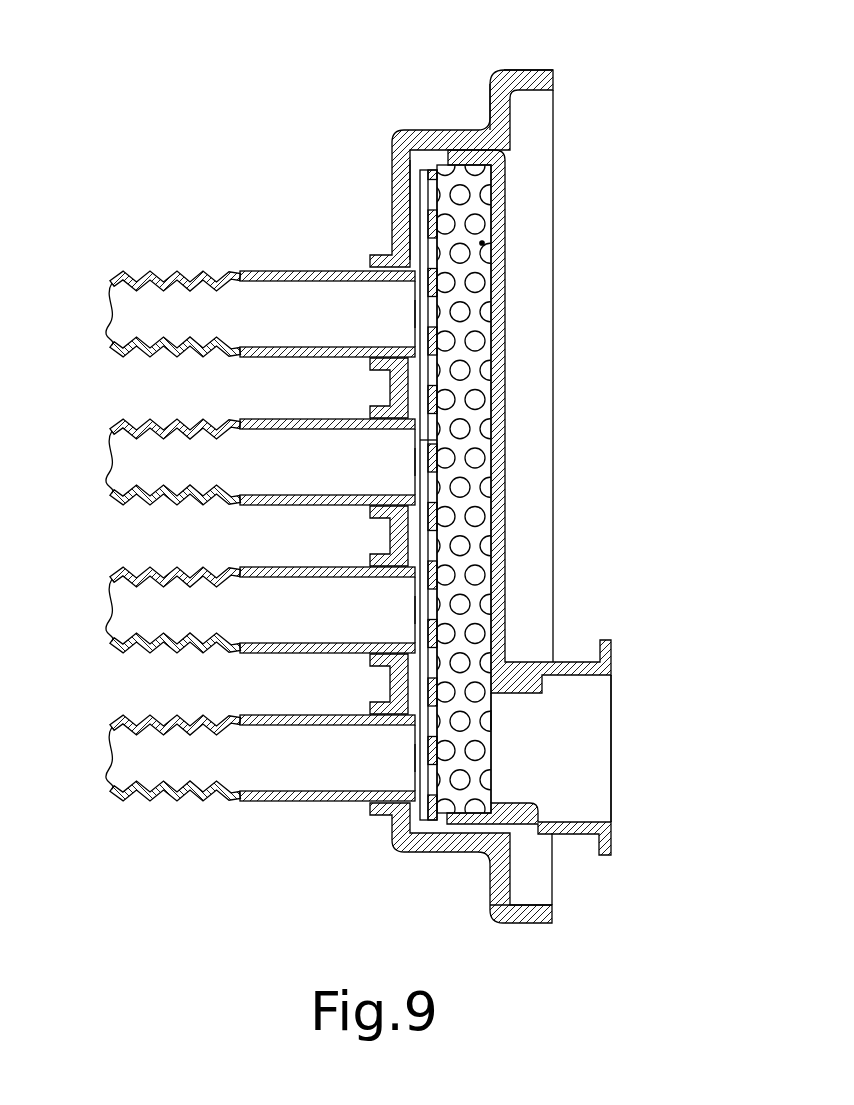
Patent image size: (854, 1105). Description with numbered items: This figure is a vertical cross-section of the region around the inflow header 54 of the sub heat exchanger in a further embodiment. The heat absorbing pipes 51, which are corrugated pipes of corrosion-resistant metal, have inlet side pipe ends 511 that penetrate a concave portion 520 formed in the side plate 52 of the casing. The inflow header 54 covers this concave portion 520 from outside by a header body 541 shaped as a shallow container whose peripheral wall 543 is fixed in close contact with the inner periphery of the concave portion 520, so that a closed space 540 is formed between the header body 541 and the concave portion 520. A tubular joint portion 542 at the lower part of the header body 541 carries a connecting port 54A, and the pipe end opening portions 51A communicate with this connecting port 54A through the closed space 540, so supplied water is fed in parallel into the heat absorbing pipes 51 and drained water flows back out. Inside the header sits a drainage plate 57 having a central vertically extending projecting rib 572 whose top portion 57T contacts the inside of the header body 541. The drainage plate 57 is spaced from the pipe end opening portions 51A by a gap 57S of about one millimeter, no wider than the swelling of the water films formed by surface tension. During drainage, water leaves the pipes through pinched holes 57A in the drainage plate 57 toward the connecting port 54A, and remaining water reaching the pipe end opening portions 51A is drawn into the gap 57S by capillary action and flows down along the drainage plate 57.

The heat absorbing pipe 51 is at (183, 271).
The pipe end opening portion 51A is at (414, 313).
The inlet side pipe end 511 is at (390, 394).
The side plate 52 is at (511, 112).
The concave portion 520 is at (497, 840).
The inflow header 54 is at (514, 375).
The connecting port 54A is at (500, 778).
The closed space 540 is at (392, 150).
The header body 541 is at (507, 180).
The joint portion 542 is at (612, 793).
The peripheral wall 543 is at (466, 131).
The drainage plate 57 is at (427, 208).
The pinched hole 57A is at (427, 446).
The gap 57S is at (421, 263).
The top portion 57T is at (501, 272).
The projecting rib 572 is at (482, 243).